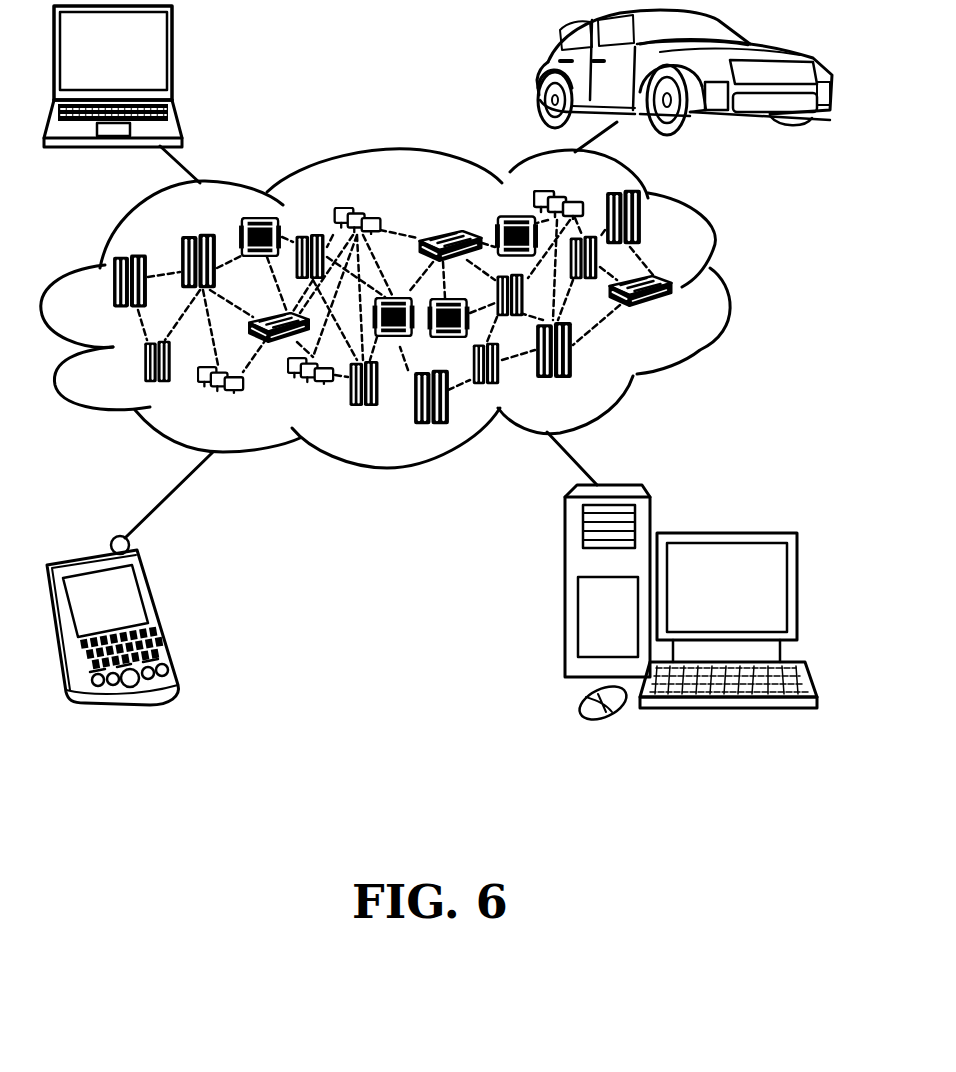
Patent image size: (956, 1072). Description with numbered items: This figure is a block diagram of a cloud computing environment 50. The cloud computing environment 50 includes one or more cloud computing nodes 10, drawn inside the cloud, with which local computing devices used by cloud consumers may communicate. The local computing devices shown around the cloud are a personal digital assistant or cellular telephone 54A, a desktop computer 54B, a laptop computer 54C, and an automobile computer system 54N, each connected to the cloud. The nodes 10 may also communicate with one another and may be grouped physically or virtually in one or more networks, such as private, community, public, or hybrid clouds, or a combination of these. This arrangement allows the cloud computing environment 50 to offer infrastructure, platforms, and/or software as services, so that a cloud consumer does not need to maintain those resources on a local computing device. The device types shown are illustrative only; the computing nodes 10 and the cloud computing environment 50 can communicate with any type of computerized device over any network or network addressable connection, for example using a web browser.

The cloud computing nodes 10 is at (680, 317).
The cloud computing environment 50 is at (725, 288).
The personal digital assistant (PDA) or cellular telephone 54A is at (160, 613).
The desktop computer 54B is at (727, 533).
The laptop computer 54C is at (172, 61).
The automobile computer system 54N is at (540, 72).